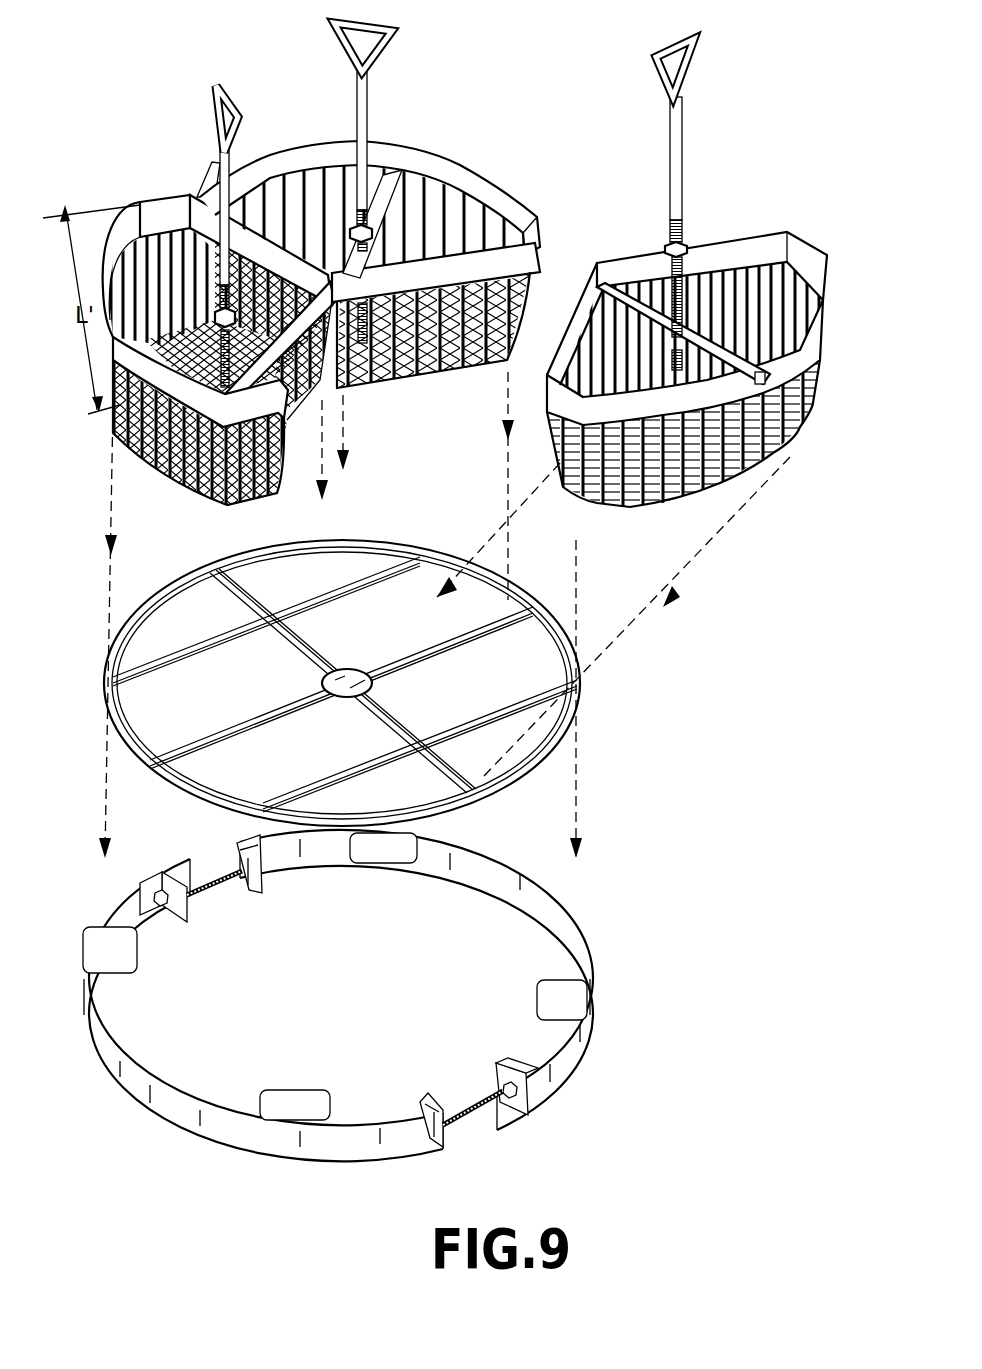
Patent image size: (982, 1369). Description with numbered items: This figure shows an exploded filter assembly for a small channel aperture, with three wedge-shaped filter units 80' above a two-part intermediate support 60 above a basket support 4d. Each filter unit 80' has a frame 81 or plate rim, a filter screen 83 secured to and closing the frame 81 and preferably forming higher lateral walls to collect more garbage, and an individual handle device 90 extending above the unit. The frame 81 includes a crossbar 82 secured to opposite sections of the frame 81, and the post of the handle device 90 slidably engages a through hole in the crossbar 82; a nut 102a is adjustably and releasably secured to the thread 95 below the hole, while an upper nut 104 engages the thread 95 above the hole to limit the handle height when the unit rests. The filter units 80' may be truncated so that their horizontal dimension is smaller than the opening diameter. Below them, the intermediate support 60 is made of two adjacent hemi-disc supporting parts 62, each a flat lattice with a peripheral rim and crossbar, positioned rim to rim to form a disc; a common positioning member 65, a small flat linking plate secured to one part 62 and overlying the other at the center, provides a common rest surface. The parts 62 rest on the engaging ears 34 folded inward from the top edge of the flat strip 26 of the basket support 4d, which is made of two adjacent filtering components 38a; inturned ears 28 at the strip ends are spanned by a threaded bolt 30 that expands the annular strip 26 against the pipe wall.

The basket support 4d is at (387, 992).
The flat strip 26 is at (480, 880).
The inturned ear 28 is at (258, 863).
The threaded bolt 30 is at (187, 877).
The basket frame engaging ears 34 is at (323, 1093).
The filtering component 38a is at (210, 1093).
The intermediate support 60 is at (388, 683).
The supporting part 62 is at (520, 597).
The common positioning member 65 is at (377, 685).
The filter unit 80' is at (495, 322).
The frame 81 is at (770, 228).
The crossbar 82 is at (640, 287).
The filter screen 83 is at (813, 397).
The handle device 90 is at (195, 38).
The thread 95 is at (690, 253).
The nut 102a is at (765, 379).
The upper nut 104 is at (687, 237).